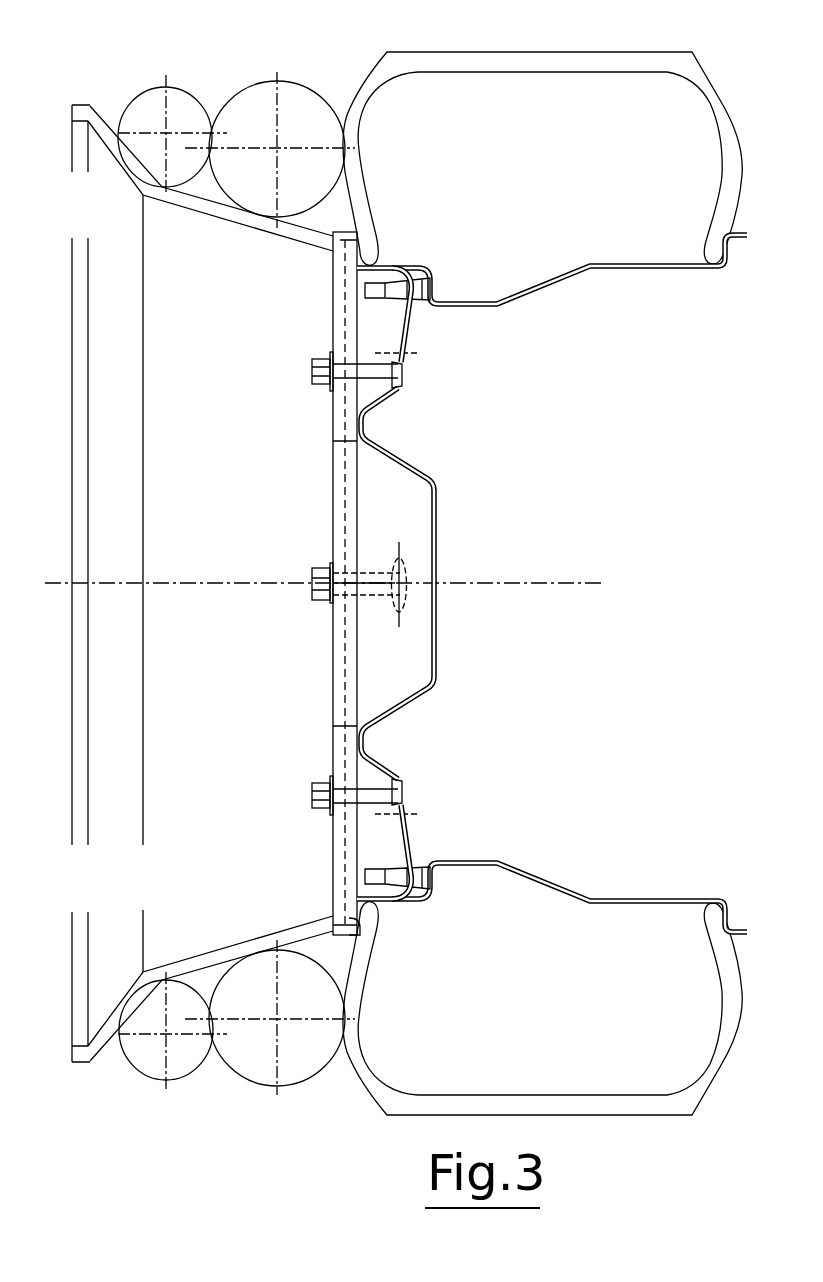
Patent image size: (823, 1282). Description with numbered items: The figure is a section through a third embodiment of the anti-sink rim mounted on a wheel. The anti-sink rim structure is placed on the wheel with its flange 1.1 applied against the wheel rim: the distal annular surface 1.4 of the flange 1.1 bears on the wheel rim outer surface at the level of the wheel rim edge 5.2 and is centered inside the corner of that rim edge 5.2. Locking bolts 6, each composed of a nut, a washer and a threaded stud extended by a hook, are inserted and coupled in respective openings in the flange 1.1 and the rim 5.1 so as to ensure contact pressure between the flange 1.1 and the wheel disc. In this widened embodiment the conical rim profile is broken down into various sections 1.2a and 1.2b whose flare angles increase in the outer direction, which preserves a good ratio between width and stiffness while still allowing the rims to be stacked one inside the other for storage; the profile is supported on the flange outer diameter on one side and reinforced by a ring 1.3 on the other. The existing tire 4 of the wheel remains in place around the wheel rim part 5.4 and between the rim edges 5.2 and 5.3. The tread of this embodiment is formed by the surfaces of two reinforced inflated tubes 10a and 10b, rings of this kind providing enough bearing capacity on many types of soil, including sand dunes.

The flange 1.1 is at (342, 757).
The profile section 1.2a is at (290, 937).
The profile section 1.2b is at (127, 1003).
The ring 1.3 is at (80, 113).
The distal annular surface 1.4 is at (340, 918).
The existing tire 4 is at (487, 60).
The rim 5.1 is at (417, 465).
The wheel rim edge 5.2 is at (350, 238).
The rim edge 5.3 is at (723, 258).
The wheel rim part 5.4 is at (468, 302).
The locking bolt 6 is at (350, 368).
The reinforced inflated tube 10a is at (267, 95).
The reinforced inflated tube 10b is at (150, 97).